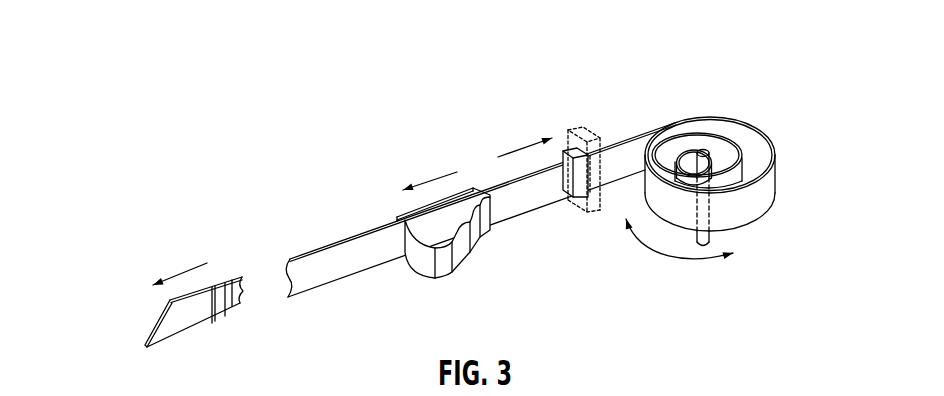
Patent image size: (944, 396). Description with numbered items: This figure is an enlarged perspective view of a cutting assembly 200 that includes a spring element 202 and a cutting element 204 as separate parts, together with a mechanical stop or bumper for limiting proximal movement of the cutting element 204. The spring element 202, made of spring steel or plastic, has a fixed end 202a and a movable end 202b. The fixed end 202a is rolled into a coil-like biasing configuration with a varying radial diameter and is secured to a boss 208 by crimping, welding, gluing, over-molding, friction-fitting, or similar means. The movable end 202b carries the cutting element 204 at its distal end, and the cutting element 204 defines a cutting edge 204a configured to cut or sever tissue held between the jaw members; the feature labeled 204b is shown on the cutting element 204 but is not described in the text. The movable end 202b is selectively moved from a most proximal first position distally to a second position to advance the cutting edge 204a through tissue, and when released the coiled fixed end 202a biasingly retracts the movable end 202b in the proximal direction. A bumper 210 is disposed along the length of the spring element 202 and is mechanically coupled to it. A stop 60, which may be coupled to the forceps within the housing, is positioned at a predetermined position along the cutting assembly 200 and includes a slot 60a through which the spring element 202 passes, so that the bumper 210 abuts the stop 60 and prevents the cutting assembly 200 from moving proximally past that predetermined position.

The cutting assembly 200 is at (317, 150).
The spring element 202 is at (330, 271).
The fixed end 202a is at (699, 153).
The movable end 202b is at (235, 303).
The cutting element 204 is at (182, 322).
The cutting edge 204a is at (157, 322).
The perforation line of strip segment 204b is at (215, 286).
The stop 60 is at (583, 126).
The slot 60a is at (594, 178).
The boss 208 is at (704, 152).
The bumper 210 is at (586, 190).